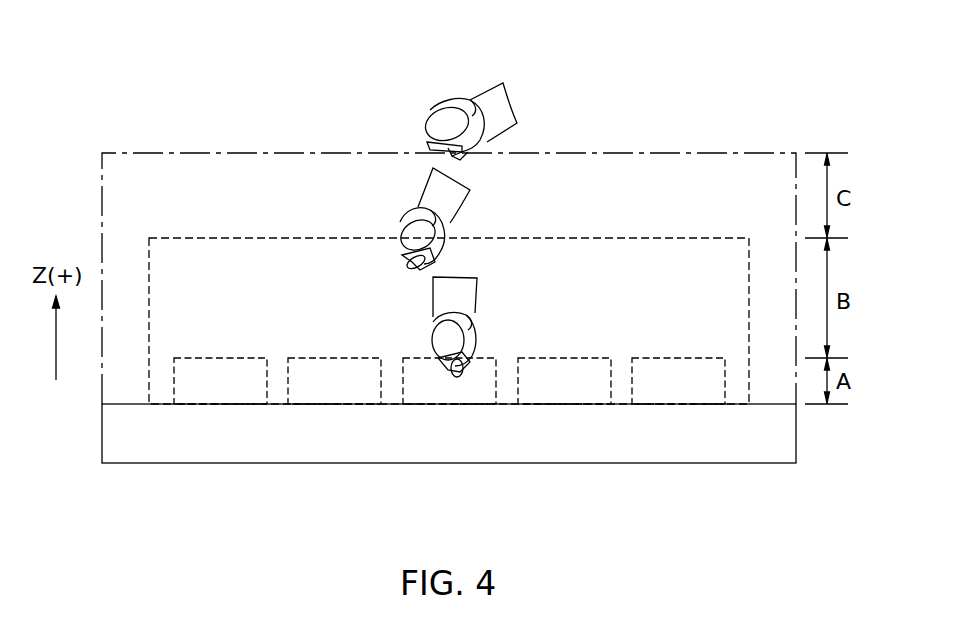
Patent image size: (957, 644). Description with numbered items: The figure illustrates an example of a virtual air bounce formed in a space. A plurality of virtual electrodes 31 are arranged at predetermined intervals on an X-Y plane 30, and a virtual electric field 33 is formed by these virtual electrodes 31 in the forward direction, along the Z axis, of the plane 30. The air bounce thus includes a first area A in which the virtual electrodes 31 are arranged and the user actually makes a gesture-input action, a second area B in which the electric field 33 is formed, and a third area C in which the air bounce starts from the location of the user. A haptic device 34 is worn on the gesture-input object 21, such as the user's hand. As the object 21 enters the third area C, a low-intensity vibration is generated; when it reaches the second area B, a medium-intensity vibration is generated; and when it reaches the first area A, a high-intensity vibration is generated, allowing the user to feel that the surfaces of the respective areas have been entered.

The gesture-input object 21 is at (490, 98).
The haptic device 34 is at (462, 103).
The virtual electric field 33 is at (707, 238).
The virtual electrodes 31 is at (678, 383).
The X-Y plane 30 is at (150, 463).